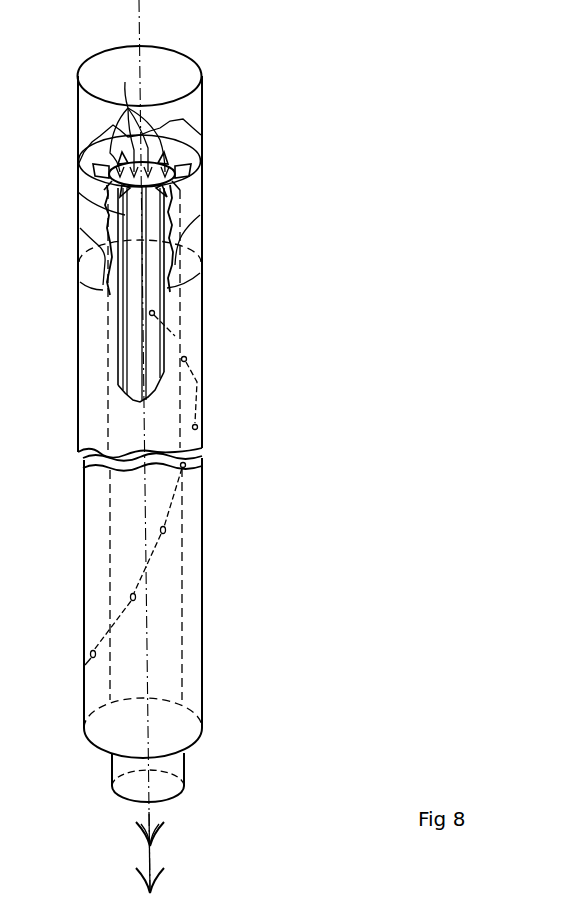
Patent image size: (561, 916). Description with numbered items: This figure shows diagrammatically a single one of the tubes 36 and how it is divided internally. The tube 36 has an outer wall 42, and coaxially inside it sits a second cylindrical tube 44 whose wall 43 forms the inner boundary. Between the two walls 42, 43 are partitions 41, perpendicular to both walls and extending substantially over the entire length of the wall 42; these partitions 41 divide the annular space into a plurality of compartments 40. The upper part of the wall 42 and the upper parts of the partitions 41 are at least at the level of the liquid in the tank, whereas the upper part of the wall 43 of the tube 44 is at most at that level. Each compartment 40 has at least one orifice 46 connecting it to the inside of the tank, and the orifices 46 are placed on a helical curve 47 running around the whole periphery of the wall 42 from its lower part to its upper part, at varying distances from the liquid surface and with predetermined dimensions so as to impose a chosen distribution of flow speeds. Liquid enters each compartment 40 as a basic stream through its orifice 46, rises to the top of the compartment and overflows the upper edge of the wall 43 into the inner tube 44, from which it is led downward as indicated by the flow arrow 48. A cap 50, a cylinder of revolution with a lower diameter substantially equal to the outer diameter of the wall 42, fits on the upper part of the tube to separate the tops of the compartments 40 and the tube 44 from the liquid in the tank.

The cap 50 is at (202, 92).
The compartments 40 is at (139, 118).
The partitions 41 is at (80, 178).
The tube 36 is at (80, 427).
The wall 42 is at (203, 640).
The helical curve 47 is at (105, 635).
The orifice 46 is at (162, 532).
The wall 43 is at (186, 762).
The tube 44 is at (122, 803).
The flow direction arrow 48 is at (156, 817).